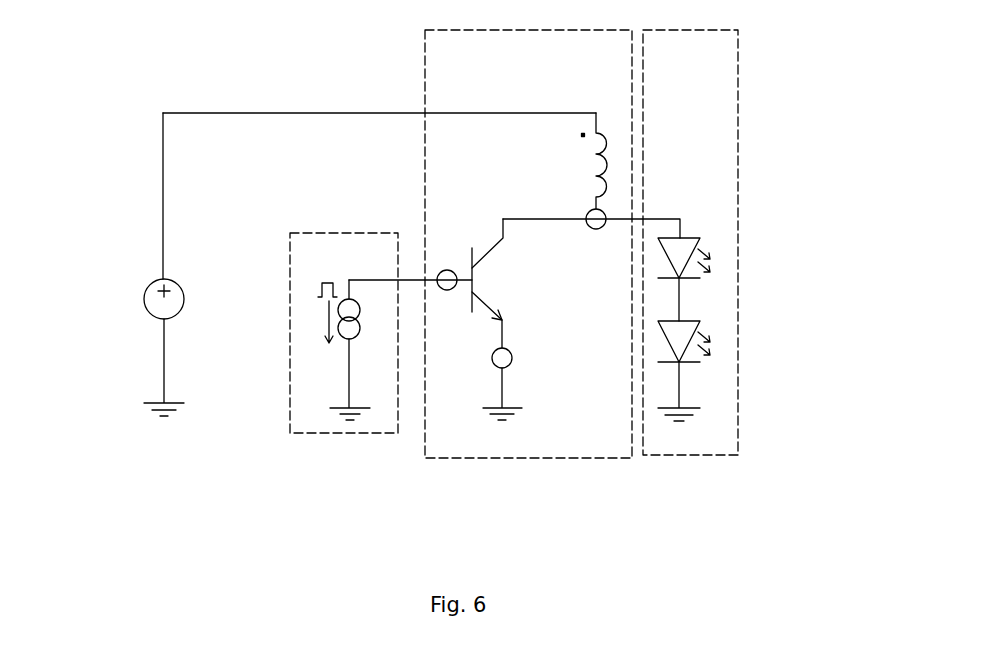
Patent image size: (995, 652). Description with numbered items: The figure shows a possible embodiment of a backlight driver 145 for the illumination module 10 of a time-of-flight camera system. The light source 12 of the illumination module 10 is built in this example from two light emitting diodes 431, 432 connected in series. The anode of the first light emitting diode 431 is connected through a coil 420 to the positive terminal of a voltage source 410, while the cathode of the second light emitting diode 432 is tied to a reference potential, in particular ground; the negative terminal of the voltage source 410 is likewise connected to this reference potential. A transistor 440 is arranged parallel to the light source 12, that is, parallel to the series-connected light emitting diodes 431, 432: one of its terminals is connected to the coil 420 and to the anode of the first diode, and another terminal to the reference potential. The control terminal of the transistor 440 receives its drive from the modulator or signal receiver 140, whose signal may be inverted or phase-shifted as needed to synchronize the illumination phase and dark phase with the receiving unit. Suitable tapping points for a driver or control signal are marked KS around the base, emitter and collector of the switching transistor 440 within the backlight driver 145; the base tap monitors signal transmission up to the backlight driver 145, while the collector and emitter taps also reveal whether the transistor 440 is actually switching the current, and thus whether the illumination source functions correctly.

The voltage source 410 is at (142, 302).
The signal receiver 140 is at (288, 433).
The backlight driver 145 is at (578, 467).
The transistor 440 is at (467, 322).
The coil 420 is at (610, 158).
The illumination module 10 is at (738, 425).
The light source 12 is at (759, 298).
The first light emitting diode 431 is at (707, 236).
The second light emitting diode 432 is at (707, 325).